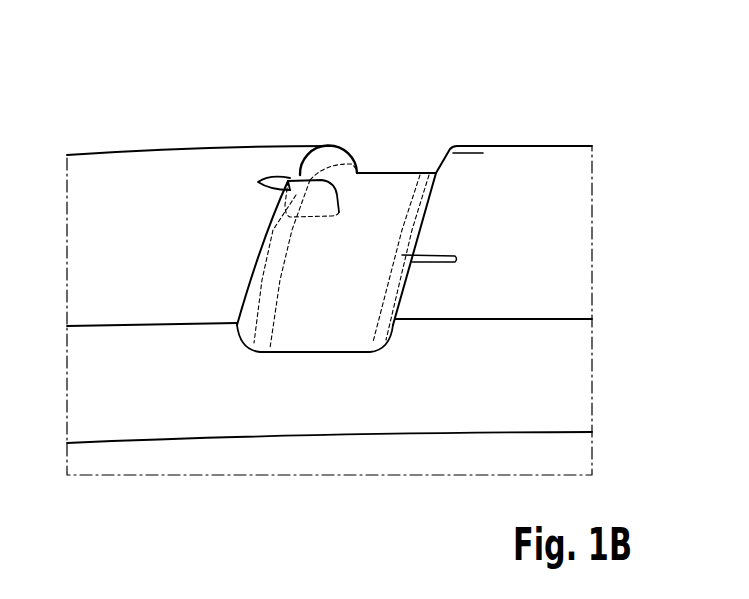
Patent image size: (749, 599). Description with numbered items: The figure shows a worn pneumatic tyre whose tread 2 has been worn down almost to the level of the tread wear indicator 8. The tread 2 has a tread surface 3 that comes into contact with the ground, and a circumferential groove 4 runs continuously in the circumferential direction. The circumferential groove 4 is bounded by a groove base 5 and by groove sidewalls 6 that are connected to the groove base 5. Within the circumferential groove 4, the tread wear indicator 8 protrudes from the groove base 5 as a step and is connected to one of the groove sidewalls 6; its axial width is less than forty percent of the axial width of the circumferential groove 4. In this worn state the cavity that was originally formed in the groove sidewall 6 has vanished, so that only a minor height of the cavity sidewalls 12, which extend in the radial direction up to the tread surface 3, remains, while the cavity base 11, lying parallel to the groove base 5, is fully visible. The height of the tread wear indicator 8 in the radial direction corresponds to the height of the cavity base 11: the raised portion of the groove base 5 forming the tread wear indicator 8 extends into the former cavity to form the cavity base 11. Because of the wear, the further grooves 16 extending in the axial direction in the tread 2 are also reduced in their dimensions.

The tread 2 is at (329, 176).
The tread surface 3 is at (118, 150).
The circumferential groove 4 is at (332, 197).
The groove base 5 is at (415, 168).
The groove sidewall 6 is at (238, 328).
The tread wear indicator 8 is at (322, 190).
The cavity base 11 is at (290, 188).
The cavity sidewalls 12 is at (283, 177).
The further grooves 16 is at (260, 234).